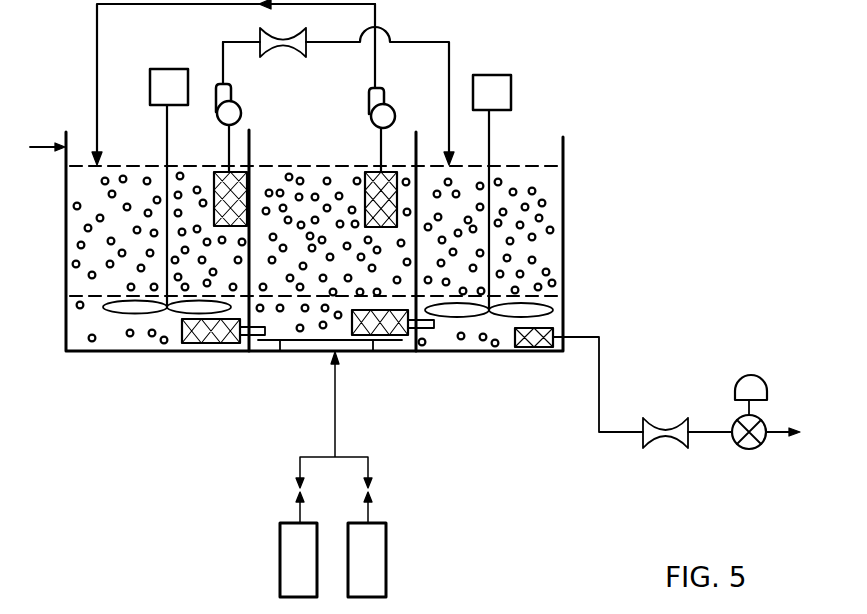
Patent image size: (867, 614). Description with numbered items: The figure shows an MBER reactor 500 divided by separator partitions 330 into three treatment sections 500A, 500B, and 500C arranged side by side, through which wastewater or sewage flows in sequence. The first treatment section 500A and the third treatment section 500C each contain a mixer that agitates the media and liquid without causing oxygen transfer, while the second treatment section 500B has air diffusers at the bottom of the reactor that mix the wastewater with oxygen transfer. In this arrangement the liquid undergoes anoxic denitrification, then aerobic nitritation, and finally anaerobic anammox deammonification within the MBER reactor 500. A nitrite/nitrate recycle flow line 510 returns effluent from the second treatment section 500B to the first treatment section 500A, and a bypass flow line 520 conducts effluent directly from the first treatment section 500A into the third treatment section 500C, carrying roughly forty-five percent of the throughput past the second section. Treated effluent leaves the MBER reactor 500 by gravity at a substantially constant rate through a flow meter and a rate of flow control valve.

The MBER reactor 500 is at (566, 150).
The first treatment section 500A is at (108, 352).
The second treatment section 500B is at (305, 352).
The third treatment section 500C is at (473, 352).
The nitrite/nitrate recycle flow line 510 is at (98, 70).
The bypass flow line 520 is at (447, 80).
The separator partition 330 is at (253, 140).